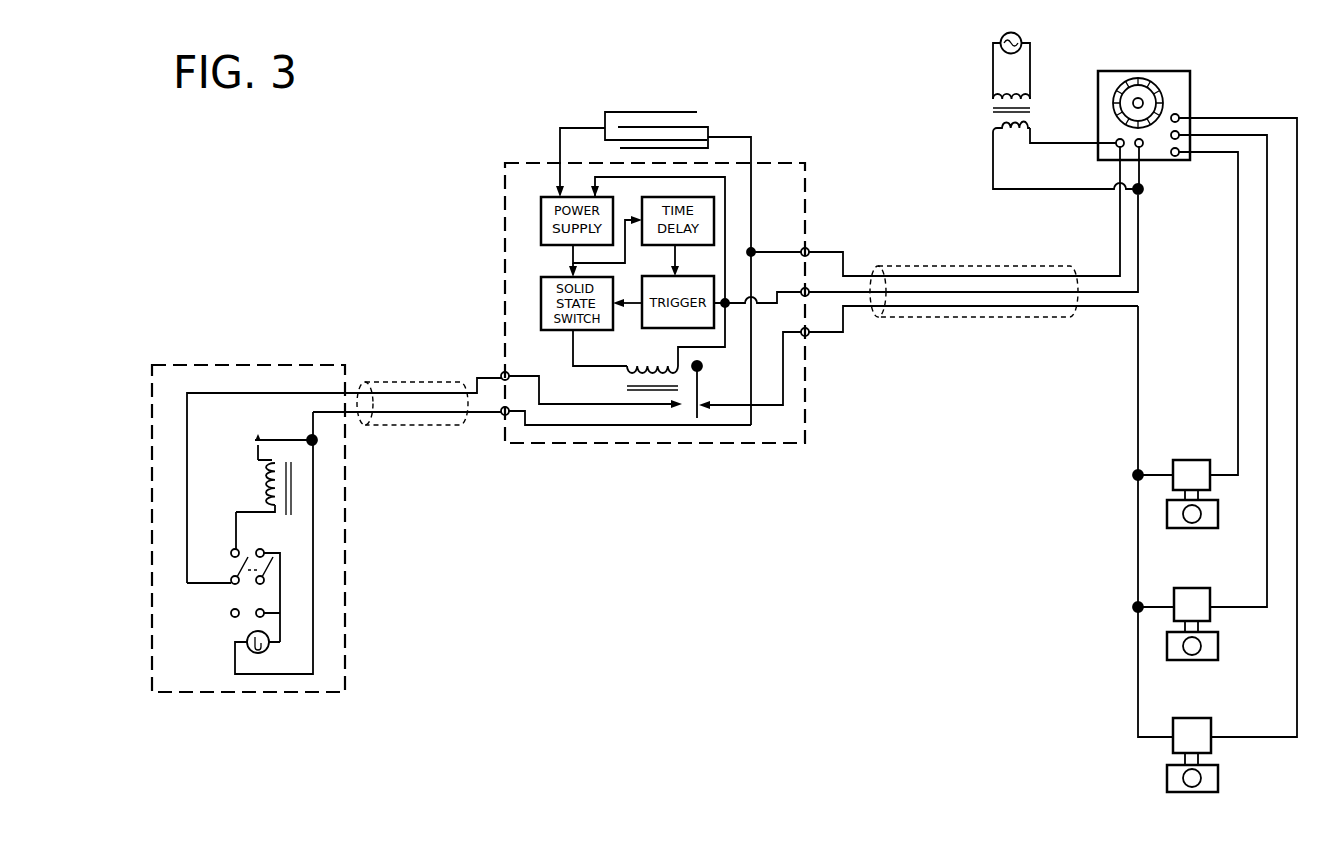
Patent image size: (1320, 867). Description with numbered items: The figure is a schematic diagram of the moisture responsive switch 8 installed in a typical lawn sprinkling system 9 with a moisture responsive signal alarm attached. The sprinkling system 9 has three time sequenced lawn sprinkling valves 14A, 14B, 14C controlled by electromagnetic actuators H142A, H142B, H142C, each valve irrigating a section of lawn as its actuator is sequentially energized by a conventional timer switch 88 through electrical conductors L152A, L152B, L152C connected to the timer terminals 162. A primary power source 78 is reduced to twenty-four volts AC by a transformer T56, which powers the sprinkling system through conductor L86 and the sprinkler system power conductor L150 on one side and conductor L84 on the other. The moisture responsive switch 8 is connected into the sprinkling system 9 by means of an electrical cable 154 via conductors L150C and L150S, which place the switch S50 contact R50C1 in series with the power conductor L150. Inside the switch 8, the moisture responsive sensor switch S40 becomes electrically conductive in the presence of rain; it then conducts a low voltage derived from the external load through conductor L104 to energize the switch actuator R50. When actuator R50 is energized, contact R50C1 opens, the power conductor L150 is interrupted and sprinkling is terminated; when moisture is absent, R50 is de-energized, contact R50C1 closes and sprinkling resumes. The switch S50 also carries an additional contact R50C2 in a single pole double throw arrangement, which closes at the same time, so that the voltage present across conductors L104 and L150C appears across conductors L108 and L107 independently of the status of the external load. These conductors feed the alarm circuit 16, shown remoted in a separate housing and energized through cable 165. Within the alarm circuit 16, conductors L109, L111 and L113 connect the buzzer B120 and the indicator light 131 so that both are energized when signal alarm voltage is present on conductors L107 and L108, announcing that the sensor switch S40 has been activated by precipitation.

The alarm circuit 16 is at (249, 356).
The conductor L108 is at (187, 447).
The conductor L107 is at (309, 436).
The conductor L113 is at (313, 586).
The buzzer B120 is at (267, 494).
The conductor L109 is at (236, 532).
The conductor L111 is at (265, 553).
The indicator light 131 is at (266, 650).
The cable 165 is at (393, 383).
The moisture responsive switch 8 is at (723, 99).
The moisture responsive sensor switch S40 is at (640, 110).
The switch actuator R50 is at (652, 369).
The switch S50 is at (710, 389).
The switch S50 contact R50C1 is at (750, 370).
The switch S50 contact R50C2 is at (596, 401).
The conductor L104 is at (808, 254).
The conductor L150C is at (801, 291).
The conductor L150S is at (808, 335).
The electrical cable 154 is at (995, 266).
The sprinkler system power conductor L150 is at (1138, 262).
The primary power source 78 is at (1020, 38).
The transformer T56 is at (1031, 108).
The conductor L84 is at (1112, 142).
The conductor L86 is at (1085, 188).
The timer switch 88 is at (1142, 72).
The timer terminals 162 is at (1181, 117).
The lawn sprinkling system 9 is at (1240, 86).
The conductor L152A is at (1238, 395).
The conductor L152B is at (1267, 558).
The conductor L152C is at (1297, 690).
The electromagnetic actuator H142A is at (1174, 460).
The electromagnetic actuator H142B is at (1175, 589).
The electromagnetic actuator H142C is at (1180, 719).
The lawn sprinkling valve 14A is at (1219, 515).
The lawn sprinkling valve 14B is at (1219, 647).
The lawn sprinkling valve 14C is at (1219, 779).